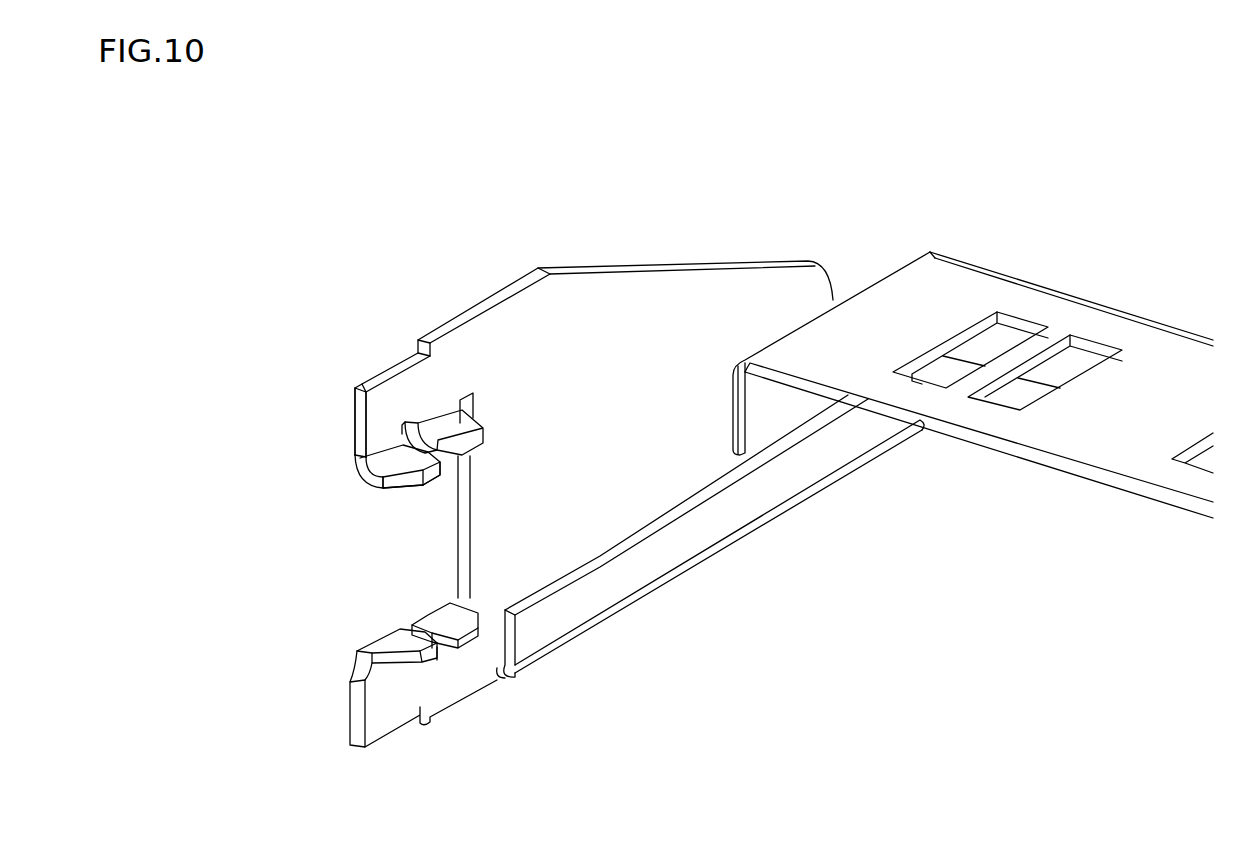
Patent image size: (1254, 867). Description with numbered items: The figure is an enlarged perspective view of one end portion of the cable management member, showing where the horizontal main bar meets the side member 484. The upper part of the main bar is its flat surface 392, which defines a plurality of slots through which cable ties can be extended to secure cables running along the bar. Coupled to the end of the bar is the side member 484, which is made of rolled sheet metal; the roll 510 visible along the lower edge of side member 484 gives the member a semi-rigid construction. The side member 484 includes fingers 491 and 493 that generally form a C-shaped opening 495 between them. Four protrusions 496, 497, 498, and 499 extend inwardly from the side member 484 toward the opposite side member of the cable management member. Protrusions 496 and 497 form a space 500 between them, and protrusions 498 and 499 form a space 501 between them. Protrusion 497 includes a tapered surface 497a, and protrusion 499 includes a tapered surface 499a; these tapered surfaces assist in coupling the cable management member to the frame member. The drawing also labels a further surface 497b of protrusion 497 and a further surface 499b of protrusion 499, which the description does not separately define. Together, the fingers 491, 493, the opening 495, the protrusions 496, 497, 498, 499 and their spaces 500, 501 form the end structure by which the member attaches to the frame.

The flat surface 392 is at (973, 358).
The side member 484 is at (594, 331).
The finger 491 is at (353, 371).
The finger 493 is at (431, 752).
The C-shaped opening 495 is at (447, 585).
The protrusion 496 is at (514, 398).
The protrusion 497 is at (331, 465).
The tapered surface 497a is at (420, 518).
The clip side portion 497b is at (496, 493).
The protrusion 498 is at (491, 669).
The protrusion 499 is at (352, 631).
The tapered surface 499a is at (397, 658).
The tongue end 499b is at (390, 728).
The space 500 is at (438, 458).
The space 501 is at (479, 703).
The roll 510 is at (710, 536).